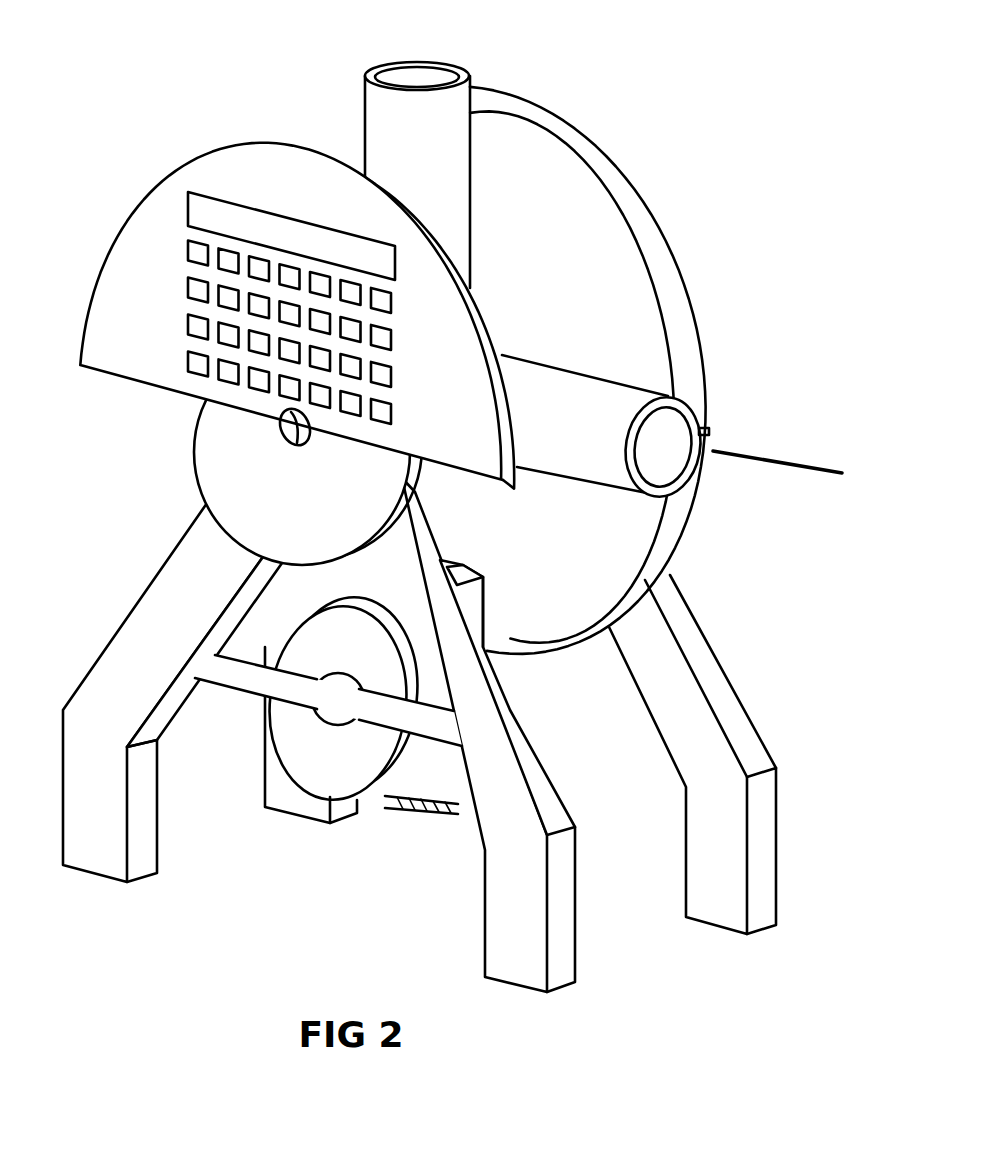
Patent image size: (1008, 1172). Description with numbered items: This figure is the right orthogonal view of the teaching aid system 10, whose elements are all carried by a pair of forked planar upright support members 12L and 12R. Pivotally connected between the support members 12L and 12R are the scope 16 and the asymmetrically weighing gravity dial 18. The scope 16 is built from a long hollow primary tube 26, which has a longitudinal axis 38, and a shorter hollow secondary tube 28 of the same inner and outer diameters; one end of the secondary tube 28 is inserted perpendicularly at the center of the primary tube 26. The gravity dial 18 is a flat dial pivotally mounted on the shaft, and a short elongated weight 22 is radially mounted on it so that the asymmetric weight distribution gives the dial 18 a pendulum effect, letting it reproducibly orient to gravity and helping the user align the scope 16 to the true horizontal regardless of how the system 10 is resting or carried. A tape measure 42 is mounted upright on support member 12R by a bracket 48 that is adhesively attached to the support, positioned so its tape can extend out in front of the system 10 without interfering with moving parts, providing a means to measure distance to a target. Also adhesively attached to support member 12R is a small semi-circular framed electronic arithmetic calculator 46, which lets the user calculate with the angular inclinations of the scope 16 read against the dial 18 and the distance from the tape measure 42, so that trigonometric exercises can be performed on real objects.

The teaching aid system 10 is at (200, 103).
The right forked planar upright support member 12R is at (138, 628).
The left forked planar upright support member 12L is at (685, 707).
The scope 16 is at (614, 376).
The asymmetrically weighing gravity dial 18 is at (543, 130).
The short elongated weight 22 is at (482, 590).
The primary tube 26 is at (565, 460).
The secondary tube 28 is at (395, 130).
The longitudinal axis 38 is at (757, 453).
The tape measure 42 is at (332, 752).
The semi-circular framed electronic arithmetic calculator 46 is at (140, 235).
The bracket 48 is at (245, 670).